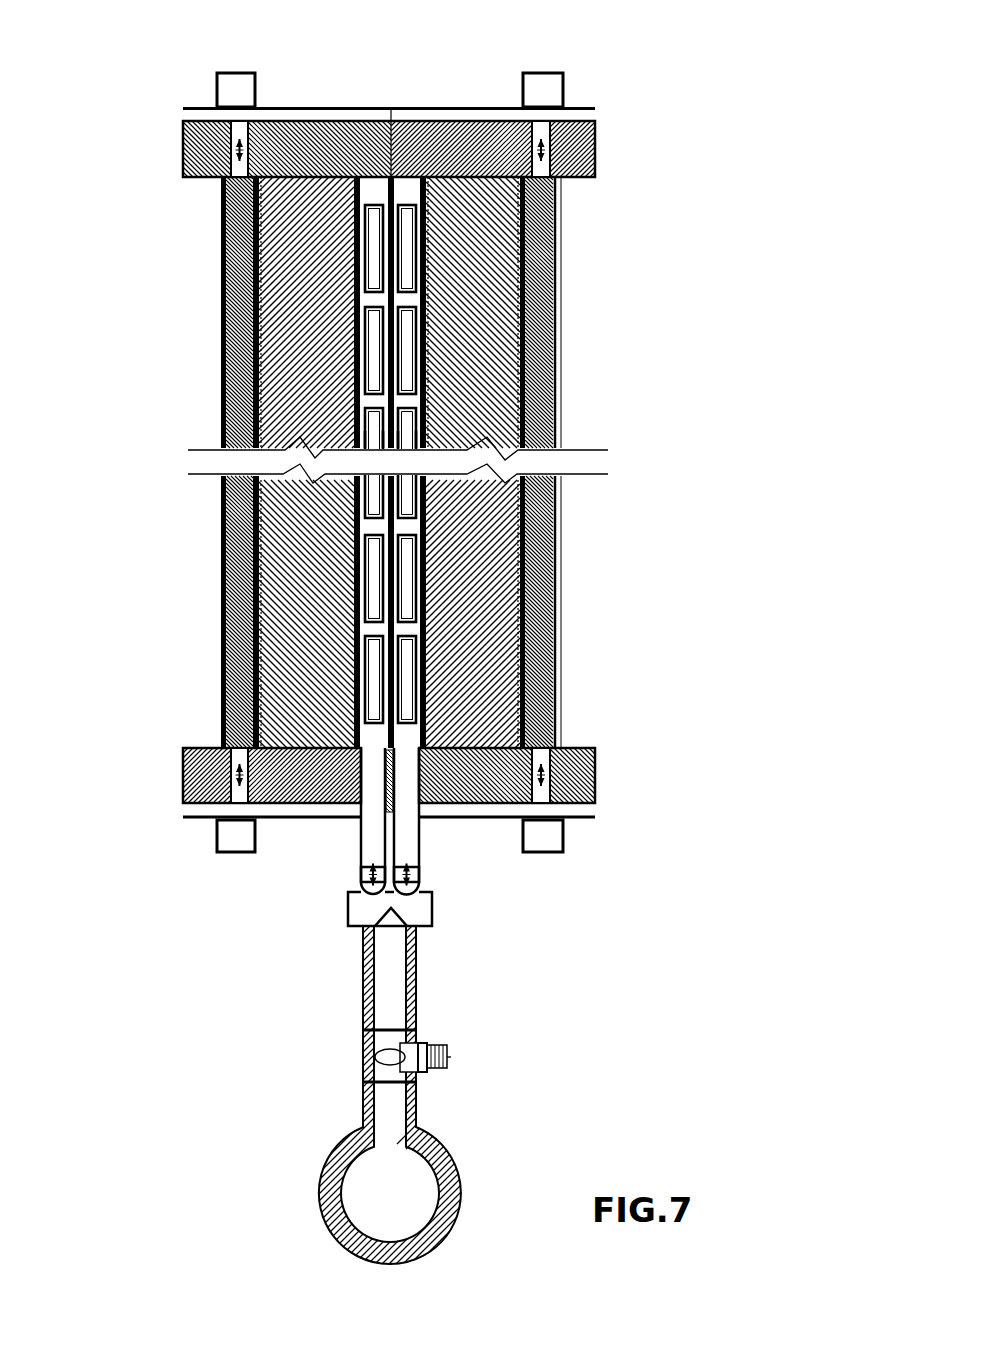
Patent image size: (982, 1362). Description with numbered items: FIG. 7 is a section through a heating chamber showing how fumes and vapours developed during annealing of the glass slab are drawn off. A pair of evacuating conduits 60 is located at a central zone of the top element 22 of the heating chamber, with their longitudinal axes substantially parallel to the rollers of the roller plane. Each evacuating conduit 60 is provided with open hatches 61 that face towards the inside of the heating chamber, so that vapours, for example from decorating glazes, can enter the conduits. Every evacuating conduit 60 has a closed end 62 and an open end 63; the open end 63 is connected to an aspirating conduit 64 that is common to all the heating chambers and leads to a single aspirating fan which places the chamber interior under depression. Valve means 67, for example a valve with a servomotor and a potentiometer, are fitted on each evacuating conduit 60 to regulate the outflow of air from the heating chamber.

The top element 22 is at (308, 227).
The evacuating conduit 60 is at (367, 400).
The open hatch 61 is at (372, 360).
The closed end 62 is at (377, 177).
The open end 63 is at (360, 743).
The aspirating conduit 64 is at (455, 1157).
The valve means 67 is at (447, 1042).